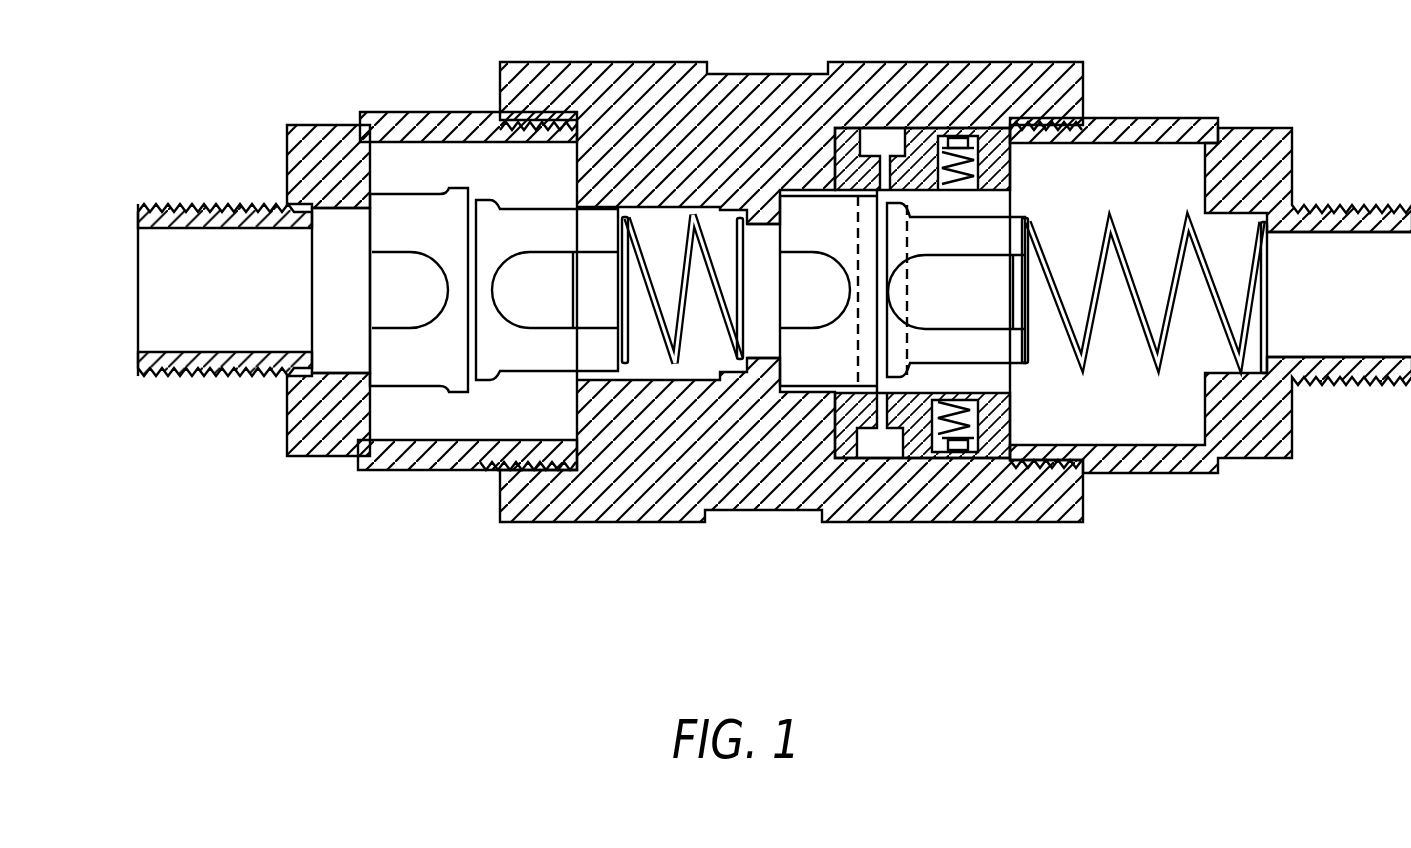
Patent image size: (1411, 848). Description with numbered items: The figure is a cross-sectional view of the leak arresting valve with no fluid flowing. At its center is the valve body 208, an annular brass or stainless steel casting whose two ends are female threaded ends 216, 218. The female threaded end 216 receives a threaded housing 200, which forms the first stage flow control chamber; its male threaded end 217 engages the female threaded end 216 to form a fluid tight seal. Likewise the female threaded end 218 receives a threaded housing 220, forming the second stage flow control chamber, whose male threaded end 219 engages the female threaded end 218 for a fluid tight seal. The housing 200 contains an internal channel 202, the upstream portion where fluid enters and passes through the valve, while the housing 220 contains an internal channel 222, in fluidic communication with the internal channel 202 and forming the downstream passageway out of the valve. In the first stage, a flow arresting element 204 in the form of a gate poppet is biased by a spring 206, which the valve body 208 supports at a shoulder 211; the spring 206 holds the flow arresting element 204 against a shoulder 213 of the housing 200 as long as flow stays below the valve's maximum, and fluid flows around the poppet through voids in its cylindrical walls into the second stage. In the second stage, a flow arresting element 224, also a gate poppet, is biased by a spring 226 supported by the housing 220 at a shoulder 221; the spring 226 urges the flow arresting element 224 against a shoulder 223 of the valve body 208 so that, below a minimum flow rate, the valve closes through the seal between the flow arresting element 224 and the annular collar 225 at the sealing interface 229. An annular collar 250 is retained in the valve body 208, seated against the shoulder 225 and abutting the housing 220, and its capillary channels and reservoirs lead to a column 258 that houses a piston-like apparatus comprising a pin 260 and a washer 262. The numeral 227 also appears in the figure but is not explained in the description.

The threaded housing 200 is at (338, 458).
The internal channel 202 is at (230, 298).
The flow arresting element 204 is at (553, 355).
The spring 206 is at (620, 281).
The valve body 208 is at (757, 512).
The shoulder 211 is at (675, 367).
The shoulder 213 is at (380, 166).
The female threaded end 216 is at (500, 122).
The male threaded end 217 is at (480, 463).
The female threaded end 218 is at (1095, 125).
The male threaded end 219 is at (1088, 463).
The threaded housing 220 is at (1260, 462).
The shoulder 221 is at (1262, 222).
The internal channel 222 is at (1380, 312).
The shoulder 223 is at (766, 205).
The flow arresting element 224 is at (992, 358).
The annular collar 225 is at (808, 450).
The spring 226 is at (1158, 358).
The inlet nut lower wall 227 is at (576, 166).
The sealing interface 229 is at (867, 193).
The annular collar 250 is at (1017, 170).
The column 258 is at (978, 128).
The pin 260 is at (958, 138).
The washer 262 is at (945, 150).